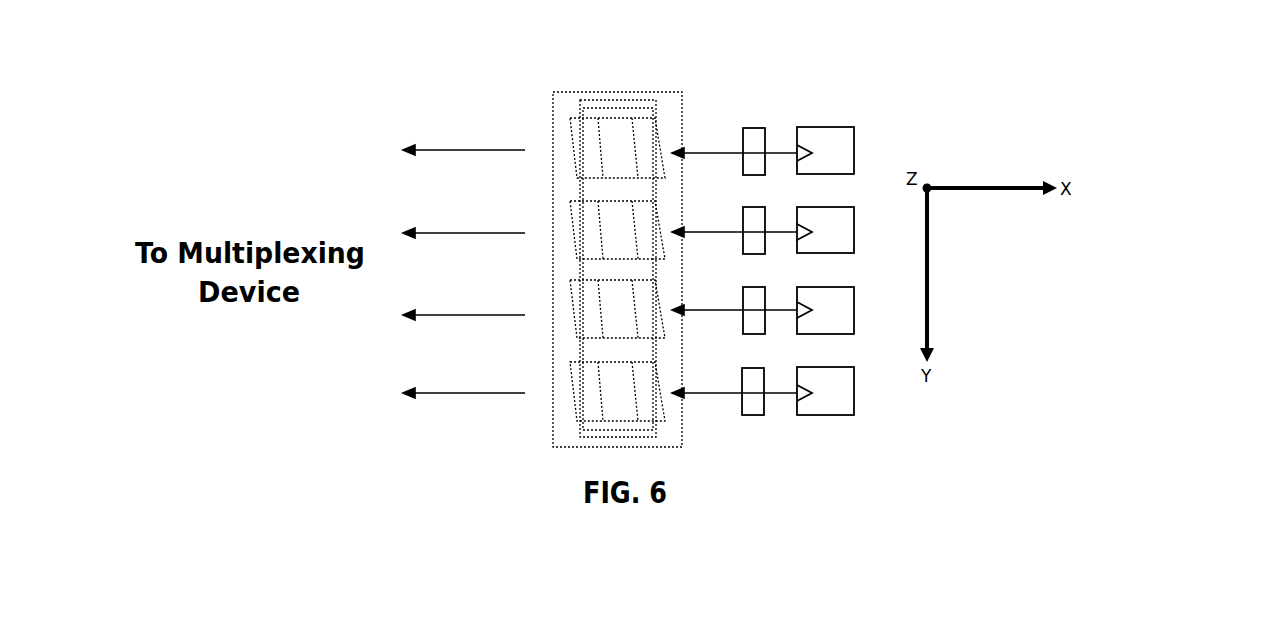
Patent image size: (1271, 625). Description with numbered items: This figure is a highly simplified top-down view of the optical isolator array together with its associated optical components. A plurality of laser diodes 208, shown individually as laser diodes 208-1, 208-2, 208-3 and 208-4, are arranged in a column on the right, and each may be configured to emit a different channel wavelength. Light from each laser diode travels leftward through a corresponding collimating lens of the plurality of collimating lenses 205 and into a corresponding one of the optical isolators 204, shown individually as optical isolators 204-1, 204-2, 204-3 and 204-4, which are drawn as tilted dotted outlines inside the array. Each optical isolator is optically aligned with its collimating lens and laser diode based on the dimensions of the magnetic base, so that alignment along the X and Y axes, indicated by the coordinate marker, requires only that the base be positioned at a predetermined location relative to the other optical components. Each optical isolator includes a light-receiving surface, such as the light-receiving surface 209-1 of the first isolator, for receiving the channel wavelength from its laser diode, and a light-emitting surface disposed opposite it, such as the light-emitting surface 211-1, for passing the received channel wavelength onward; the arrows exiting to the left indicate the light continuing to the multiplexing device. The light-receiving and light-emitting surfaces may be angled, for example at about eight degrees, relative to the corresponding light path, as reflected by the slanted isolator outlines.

The optical isolators 204 is at (697, 92).
The optical isolator 204-1 is at (577, 122).
The optical isolator 204-2 is at (655, 198).
The optical isolator 204-3 is at (655, 273).
The optical isolator 204-4 is at (655, 349).
The collimating lenses 205 is at (788, 115).
The laser diodes 208 is at (867, 86).
The laser diode 208-1 is at (833, 131).
The laser diode 208-2 is at (833, 213).
The laser diode 208-3 is at (833, 293).
The laser diode 208-4 is at (833, 375).
The light-receiving surface 209-1 is at (665, 127).
The light-emitting surface 211-1 is at (557, 134).